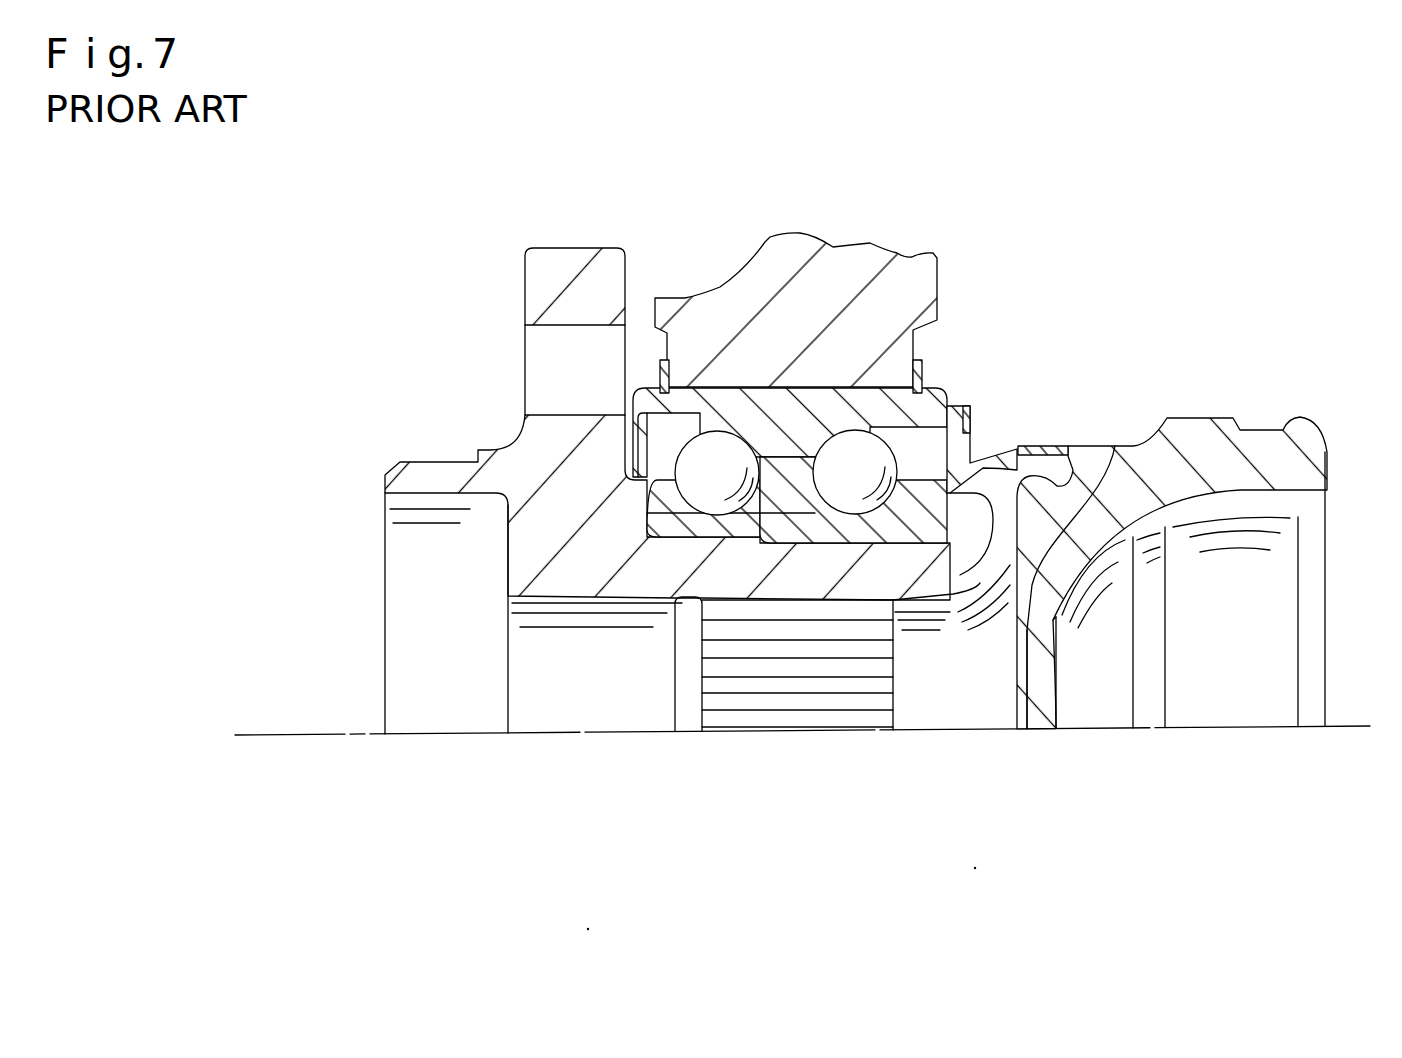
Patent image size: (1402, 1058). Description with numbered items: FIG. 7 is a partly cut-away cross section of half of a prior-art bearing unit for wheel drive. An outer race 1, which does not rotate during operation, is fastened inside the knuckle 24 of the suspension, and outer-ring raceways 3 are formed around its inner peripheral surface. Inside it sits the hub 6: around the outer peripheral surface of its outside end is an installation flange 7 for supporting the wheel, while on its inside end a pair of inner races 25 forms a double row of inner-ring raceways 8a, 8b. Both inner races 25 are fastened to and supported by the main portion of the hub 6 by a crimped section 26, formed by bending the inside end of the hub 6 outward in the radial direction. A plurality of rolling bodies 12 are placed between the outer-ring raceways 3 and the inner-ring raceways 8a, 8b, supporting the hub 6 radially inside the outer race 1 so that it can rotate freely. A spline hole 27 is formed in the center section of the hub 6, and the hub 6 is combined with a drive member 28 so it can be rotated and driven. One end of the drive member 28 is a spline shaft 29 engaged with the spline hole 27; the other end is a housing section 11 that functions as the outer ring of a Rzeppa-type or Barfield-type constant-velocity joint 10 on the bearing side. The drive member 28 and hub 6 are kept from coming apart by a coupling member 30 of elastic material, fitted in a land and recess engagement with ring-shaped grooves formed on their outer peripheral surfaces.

The outer race 1 is at (807, 423).
The outer-ring raceways 3 is at (707, 432).
The hub 6 is at (496, 434).
The installation flange 7 is at (570, 263).
The inner-ring raceway 8a is at (703, 530).
The inner-ring raceway 8b is at (897, 603).
The constant-velocity joint 10 is at (1239, 722).
The housing section 11 is at (1197, 430).
The rolling bodies 12 is at (745, 445).
The knuckle 24 is at (937, 252).
The inner races 25 is at (645, 527).
The crimped section 26 is at (971, 530).
The spline hole 27 is at (800, 603).
The drive member 28 is at (995, 710).
The spline shaft 29 is at (743, 683).
The coupling member 30 is at (1090, 573).